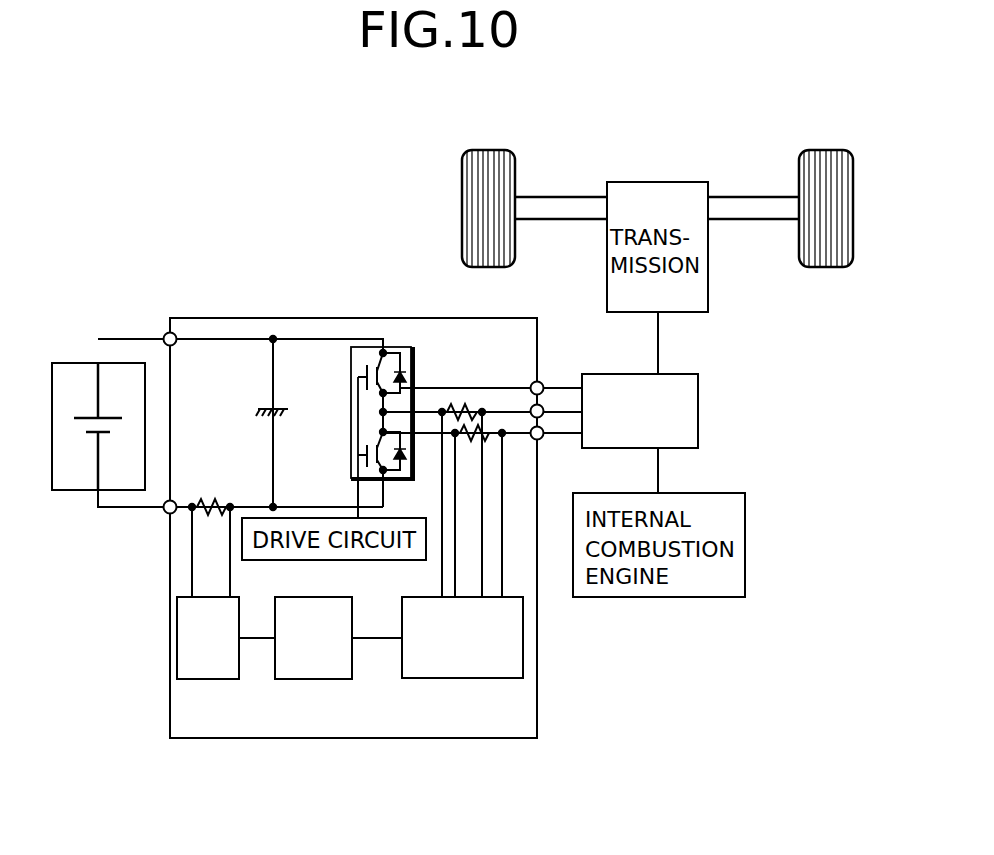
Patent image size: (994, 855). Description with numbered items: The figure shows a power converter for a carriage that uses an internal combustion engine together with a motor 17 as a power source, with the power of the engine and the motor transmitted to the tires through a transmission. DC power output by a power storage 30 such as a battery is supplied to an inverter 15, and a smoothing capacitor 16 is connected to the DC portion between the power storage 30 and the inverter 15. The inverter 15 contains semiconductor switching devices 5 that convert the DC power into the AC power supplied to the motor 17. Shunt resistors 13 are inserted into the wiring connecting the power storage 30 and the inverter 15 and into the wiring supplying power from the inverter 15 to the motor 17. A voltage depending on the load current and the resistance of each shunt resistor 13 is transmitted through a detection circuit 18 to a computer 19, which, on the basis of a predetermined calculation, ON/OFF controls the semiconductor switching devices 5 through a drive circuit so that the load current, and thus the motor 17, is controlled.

The power storage 30 is at (68, 362).
The smoothing capacitor 16 is at (268, 407).
The inverter 15 is at (350, 386).
The semiconductor switching devices 5 is at (373, 360).
The shunt resistor 13 is at (452, 402).
The motor 17 is at (700, 404).
The detection circuit 18 is at (178, 656).
The computer 19 is at (312, 680).